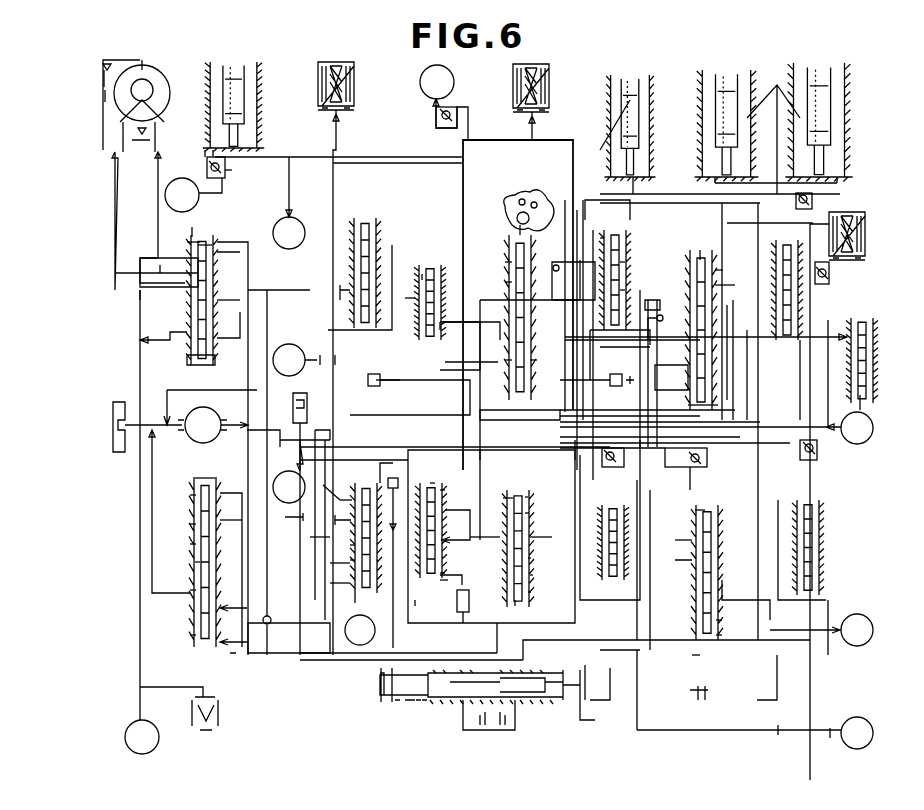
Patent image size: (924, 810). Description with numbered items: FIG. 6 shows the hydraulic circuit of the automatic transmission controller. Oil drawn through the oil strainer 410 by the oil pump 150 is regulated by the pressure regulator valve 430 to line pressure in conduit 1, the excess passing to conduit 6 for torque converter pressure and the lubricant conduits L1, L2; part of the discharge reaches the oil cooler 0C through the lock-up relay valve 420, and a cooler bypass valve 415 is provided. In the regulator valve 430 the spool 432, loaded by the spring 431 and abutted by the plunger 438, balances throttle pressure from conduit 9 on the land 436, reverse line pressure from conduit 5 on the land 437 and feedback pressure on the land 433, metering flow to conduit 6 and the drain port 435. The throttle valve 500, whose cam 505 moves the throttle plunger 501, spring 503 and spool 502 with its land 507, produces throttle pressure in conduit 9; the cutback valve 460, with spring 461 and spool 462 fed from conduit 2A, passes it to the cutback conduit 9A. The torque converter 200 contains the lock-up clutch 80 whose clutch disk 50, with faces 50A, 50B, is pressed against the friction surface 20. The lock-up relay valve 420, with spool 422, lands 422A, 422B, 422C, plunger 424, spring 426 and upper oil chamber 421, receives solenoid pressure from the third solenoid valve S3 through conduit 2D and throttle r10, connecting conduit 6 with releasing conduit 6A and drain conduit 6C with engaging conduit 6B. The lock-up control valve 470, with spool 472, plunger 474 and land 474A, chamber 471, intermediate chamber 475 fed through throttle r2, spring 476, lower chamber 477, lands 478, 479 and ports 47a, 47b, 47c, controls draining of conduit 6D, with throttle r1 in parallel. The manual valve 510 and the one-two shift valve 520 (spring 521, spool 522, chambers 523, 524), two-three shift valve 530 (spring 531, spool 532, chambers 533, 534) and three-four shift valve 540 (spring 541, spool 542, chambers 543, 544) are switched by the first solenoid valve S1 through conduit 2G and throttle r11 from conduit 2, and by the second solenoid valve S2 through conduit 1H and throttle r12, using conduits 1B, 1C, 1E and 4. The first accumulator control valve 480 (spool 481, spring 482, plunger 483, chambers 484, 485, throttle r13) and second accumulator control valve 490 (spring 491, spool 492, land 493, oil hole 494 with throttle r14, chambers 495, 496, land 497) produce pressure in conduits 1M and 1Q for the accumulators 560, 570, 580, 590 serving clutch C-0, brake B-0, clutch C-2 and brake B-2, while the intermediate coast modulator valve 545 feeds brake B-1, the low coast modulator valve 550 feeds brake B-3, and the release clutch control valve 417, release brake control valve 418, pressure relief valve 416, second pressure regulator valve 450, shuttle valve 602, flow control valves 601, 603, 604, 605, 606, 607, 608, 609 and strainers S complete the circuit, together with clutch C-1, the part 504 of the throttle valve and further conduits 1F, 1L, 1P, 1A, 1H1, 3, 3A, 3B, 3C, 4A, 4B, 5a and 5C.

The torque converter 200 is at (166, 90).
The lock-up clutch 80 is at (100, 68).
The clutch releasing face 50B is at (104, 72).
The friction surface 20 is at (104, 78).
The clutch releasing face 50A is at (105, 83).
The clutch disk 50 is at (107, 95).
The lock-up clutch releasing oil conduit 6A is at (107, 186).
The lock-up clutch engaging oil conduit 6B is at (155, 186).
The drain conduit 6C is at (138, 332).
The drain conduit 6D is at (245, 287).
The conduit 6 is at (245, 256).
The accumulator 560 is at (258, 92).
The accumulator 570 is at (660, 94).
The accumulator 580 is at (748, 86).
The accumulator 590 is at (852, 88).
The flow control valve 601 is at (204, 161).
The shuttle valve 602 is at (704, 450).
The flow control valve 603 is at (612, 472).
The flow control valve 604 is at (812, 200).
The flow control valve 605 is at (526, 240).
The flow control valve 606 is at (602, 219).
The flow control valve 607 is at (456, 106).
The flow control valve 608 is at (828, 450).
The flow control valve 609 is at (834, 272).
The clutch C-0 is at (193, 195).
The clutch C1 C-1 is at (360, 630).
The clutch C-2 is at (289, 473).
The brake B-0 is at (289, 203).
The brake B-1 is at (444, 102).
The brake B-2 is at (716, 428).
The brake B-3 is at (821, 630).
The lubricant conduit L1 is at (304, 360).
The lubricant conduit L2 is at (755, 699).
The oil pump 150 is at (198, 416).
The oil cooler 0C is at (164, 522).
The first solenoid valve S1 is at (557, 69).
The second solenoid valve S2 is at (868, 224).
The third solenoid valve S3 is at (356, 78).
The oil strainer S is at (466, 606).
The oil passage 1F is at (284, 157).
The oil passage 1L is at (359, 164).
The conduit 1Q is at (692, 176).
The oil passage 1P is at (570, 305).
The oil passage 1A is at (668, 326).
The conduit 1B is at (730, 320).
The conduit 1C is at (742, 612).
The conduit 1E is at (730, 356).
The conduit 1H is at (685, 531).
The oil passage 1H1 is at (740, 421).
The conduit 1M is at (485, 524).
The conduit 1 is at (222, 336).
The conduit 2G is at (534, 128).
The conduit 2D is at (235, 239).
The conduit 2A is at (400, 387).
The conduit 2 is at (561, 658).
The third speed passage 3 is at (654, 302).
The oil passage 3A is at (723, 286).
The oil passage 3B is at (800, 380).
The oil passage 3C is at (763, 218).
The conduit 4 is at (584, 686).
The oil passage 4A is at (782, 343).
The oil passage 4B is at (824, 396).
The conduit 5 is at (475, 662).
The oil passage 5a is at (322, 435).
The oil passage 5C is at (727, 582).
The conduit 9 is at (452, 312).
The cutback pressure output conduit 9A is at (490, 332).
The oil strainer 410 is at (112, 454).
The cooler bypass valve 415 is at (216, 710).
The pressure relief valve 416 is at (291, 421).
The release clutch control valve 417 is at (830, 556).
The release brake control valve 418 is at (616, 590).
The lock-up relay valve 420 is at (220, 224).
The upper oil chamber 421 is at (203, 226).
The spool 422 is at (217, 248).
The upper land 422A is at (192, 244).
The intermediate land 422B is at (115, 273).
The lower land 422C is at (195, 302).
The plunger 424 is at (186, 364).
The spring 426 is at (220, 314).
The pressure regulator valve 430 is at (198, 660).
The spring 431 is at (190, 544).
The spool 432 is at (195, 562).
The land 433 is at (186, 634).
The drain port 435 is at (182, 597).
The land 436 is at (204, 480).
The land 437 is at (190, 524).
The plunger 438 is at (188, 498).
The second pressure regulator valve 450 is at (378, 222).
The cutback valve 460 is at (436, 266).
The spring 461 is at (426, 278).
The spool 462 is at (426, 300).
The lock-up control valve 470 is at (349, 479).
The oil chamber 471 is at (404, 460).
The spool 472 is at (442, 610).
The plunger 474 is at (346, 509).
The land 474A is at (366, 482).
The intermediate oil chamber 475 is at (350, 545).
The spring 476 is at (370, 637).
The lower oil chamber 477 is at (365, 600).
The land 478 is at (416, 604).
The upper end land 479 is at (352, 560).
The normally open port 47a is at (346, 567).
The drain port 47b is at (346, 587).
The port 47c is at (305, 592).
The first accumulator control valve 480 is at (425, 598).
The spool 481 is at (445, 568).
The spring 482 is at (478, 474).
The plunger 483 is at (446, 478).
The lower oil chamber 484 is at (458, 579).
The upper oil chamber 485 is at (436, 482).
The second accumulator control valve 490 is at (529, 606).
The spring 491 is at (528, 606).
The spool 492 is at (528, 592).
The upper land 493 is at (529, 513).
The oil hole 494 is at (504, 498).
The upper oil chamber 495 is at (527, 497).
The intermediate oil chamber 496 is at (528, 558).
The lower land 497 is at (530, 575).
The throttle valve 500 is at (499, 196).
The throttle plunger 501 is at (506, 266).
The spool 502 is at (536, 364).
The spring 503 is at (506, 284).
The chamber 504 is at (526, 386).
The cam 505 is at (530, 198).
The land 507 is at (522, 366).
The manual valve 510 is at (372, 718).
The 1-2 shift valve 520 is at (713, 656).
The spring 521 is at (720, 640).
The spool 522 is at (725, 625).
The lower oil chamber 523 is at (690, 658).
The upper oil chamber 524 is at (709, 512).
The 2-3 shift valve 530 is at (686, 240).
The spring 531 is at (705, 392).
The spool 532 is at (722, 268).
The oil chamber 533 is at (671, 377).
The oil chamber 534 is at (708, 260).
The 3-4 shift valve 540 is at (629, 218).
The spring 541 is at (597, 310).
The spool 542 is at (596, 282).
The upper oil chamber 543 is at (603, 236).
The lower oil chamber 544 is at (620, 352).
The intermediate coast modulator valve 545 is at (812, 238).
The low coast modulator valve 550 is at (874, 363).
The throttle r1 is at (286, 513).
The throttle r2 is at (310, 538).
The throttle r10 is at (410, 394).
The throttle r11 is at (409, 491).
The throttle r12 is at (628, 396).
The throttle r13 is at (456, 526).
The throttle r14 is at (545, 531).